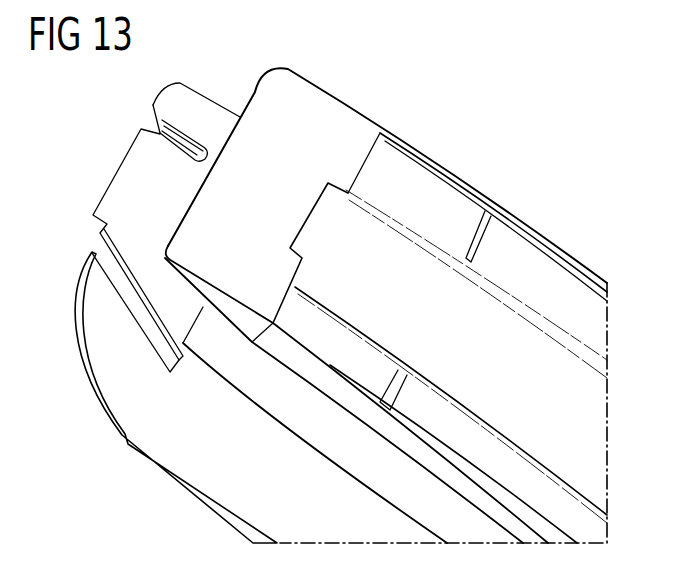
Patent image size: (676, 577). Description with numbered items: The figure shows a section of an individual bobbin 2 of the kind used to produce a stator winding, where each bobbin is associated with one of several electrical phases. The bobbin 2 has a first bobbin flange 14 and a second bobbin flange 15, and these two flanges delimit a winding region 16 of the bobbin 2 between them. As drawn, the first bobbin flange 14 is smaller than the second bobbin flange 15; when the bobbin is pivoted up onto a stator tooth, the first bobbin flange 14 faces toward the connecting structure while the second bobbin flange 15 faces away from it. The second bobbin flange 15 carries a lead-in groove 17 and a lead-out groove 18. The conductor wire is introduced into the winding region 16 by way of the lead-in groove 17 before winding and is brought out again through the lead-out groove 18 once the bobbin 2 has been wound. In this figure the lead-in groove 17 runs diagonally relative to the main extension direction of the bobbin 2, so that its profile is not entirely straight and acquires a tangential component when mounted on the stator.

The bobbin 2 is at (486, 156).
The first bobbin flange 14 is at (320, 98).
The second bobbin flange 15 is at (250, 498).
The winding region 16 is at (245, 412).
The lead-in groove 17 is at (143, 310).
The lead-out groove 18 is at (180, 143).